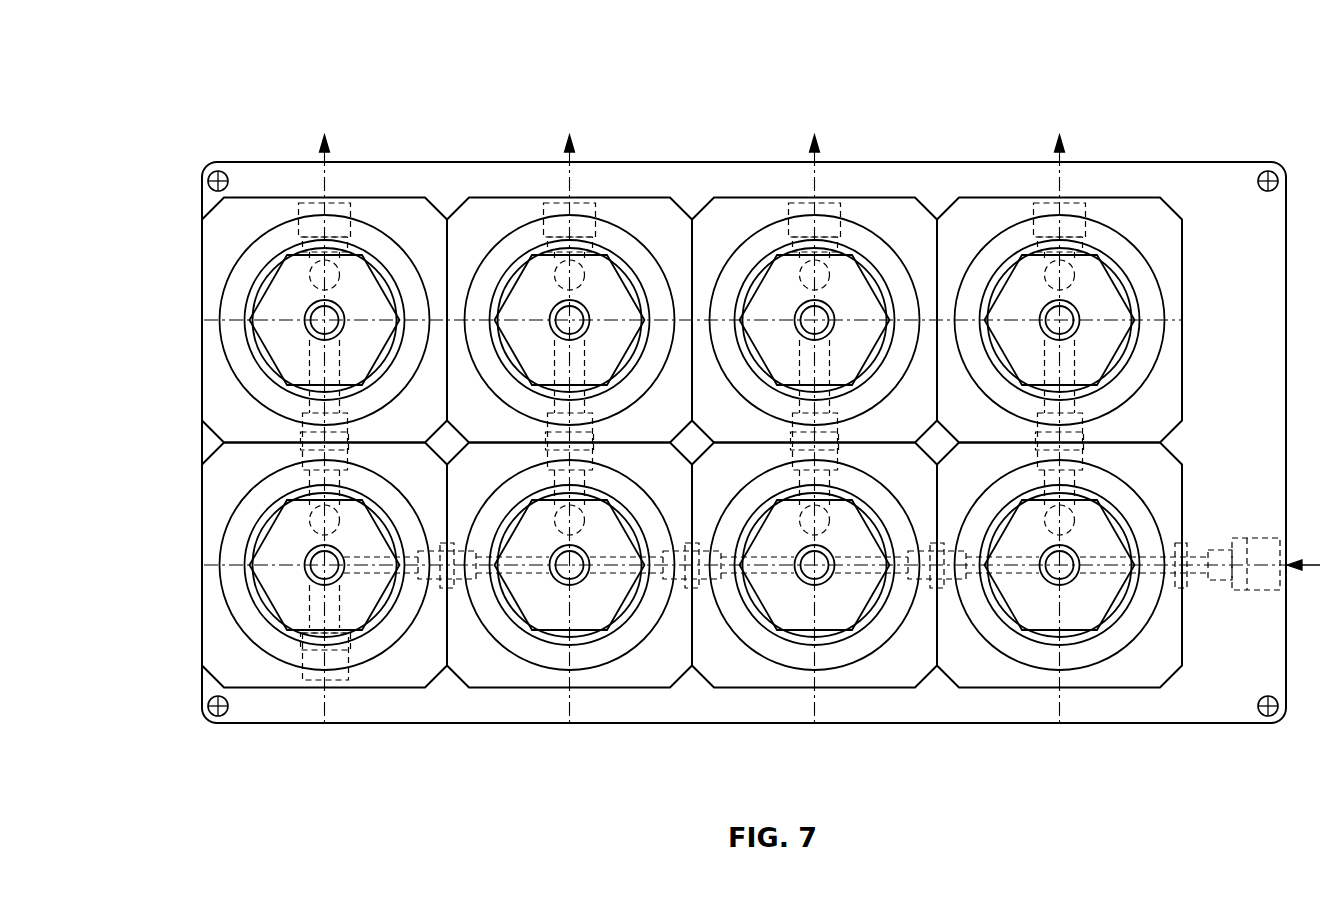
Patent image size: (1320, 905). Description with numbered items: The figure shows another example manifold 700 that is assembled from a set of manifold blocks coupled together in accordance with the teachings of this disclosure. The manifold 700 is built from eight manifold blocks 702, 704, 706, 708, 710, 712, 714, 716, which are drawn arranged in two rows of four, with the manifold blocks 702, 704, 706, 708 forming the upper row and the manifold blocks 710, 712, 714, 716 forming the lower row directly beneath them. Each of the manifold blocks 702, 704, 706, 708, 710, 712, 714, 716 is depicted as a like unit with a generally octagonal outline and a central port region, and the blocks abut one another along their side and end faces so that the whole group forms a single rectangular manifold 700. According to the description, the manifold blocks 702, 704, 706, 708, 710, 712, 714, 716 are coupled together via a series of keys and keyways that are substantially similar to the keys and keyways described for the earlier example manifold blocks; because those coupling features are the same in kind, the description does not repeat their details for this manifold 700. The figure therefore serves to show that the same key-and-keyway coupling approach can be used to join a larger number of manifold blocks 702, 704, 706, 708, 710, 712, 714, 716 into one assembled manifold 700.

The manifold 700 is at (246, 50).
The manifold block 702 is at (262, 197).
The manifold block 704 is at (490, 197).
The manifold block 706 is at (745, 197).
The manifold block 708 is at (990, 197).
The manifold block 710 is at (265, 688).
The manifold block 712 is at (493, 688).
The manifold block 714 is at (748, 688).
The manifold block 716 is at (993, 688).